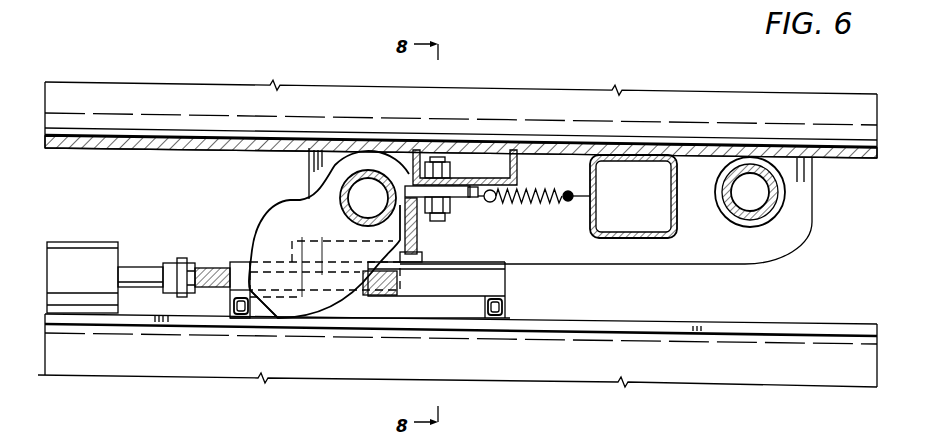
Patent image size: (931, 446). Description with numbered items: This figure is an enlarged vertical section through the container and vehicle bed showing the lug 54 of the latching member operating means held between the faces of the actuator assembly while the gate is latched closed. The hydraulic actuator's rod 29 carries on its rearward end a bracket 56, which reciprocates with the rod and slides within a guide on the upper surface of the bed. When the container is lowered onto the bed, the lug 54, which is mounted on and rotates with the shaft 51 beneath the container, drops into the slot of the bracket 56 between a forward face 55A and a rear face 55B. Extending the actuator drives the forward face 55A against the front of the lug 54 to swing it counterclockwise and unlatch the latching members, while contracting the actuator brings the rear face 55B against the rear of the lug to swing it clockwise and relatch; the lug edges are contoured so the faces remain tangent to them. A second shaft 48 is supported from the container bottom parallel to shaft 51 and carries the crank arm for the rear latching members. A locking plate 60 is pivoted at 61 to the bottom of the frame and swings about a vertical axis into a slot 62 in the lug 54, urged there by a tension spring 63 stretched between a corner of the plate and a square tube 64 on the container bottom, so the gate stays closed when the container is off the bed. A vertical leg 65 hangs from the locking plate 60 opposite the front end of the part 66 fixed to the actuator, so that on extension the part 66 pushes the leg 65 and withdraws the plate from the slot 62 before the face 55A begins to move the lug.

The rod 29 is at (144, 267).
The shaft 48 is at (778, 210).
The shaft 51 is at (360, 188).
The lug 54 is at (280, 318).
The forward face 55A is at (238, 262).
The rear face 55B is at (352, 292).
The bracket 56 is at (215, 293).
The locking plate 60 is at (458, 197).
The pivot 61 is at (440, 163).
The slot 62 is at (410, 152).
The tension spring 63 is at (542, 190).
The square tube 64 is at (634, 240).
The vertical leg 65 is at (418, 241).
The part 66 is at (406, 264).